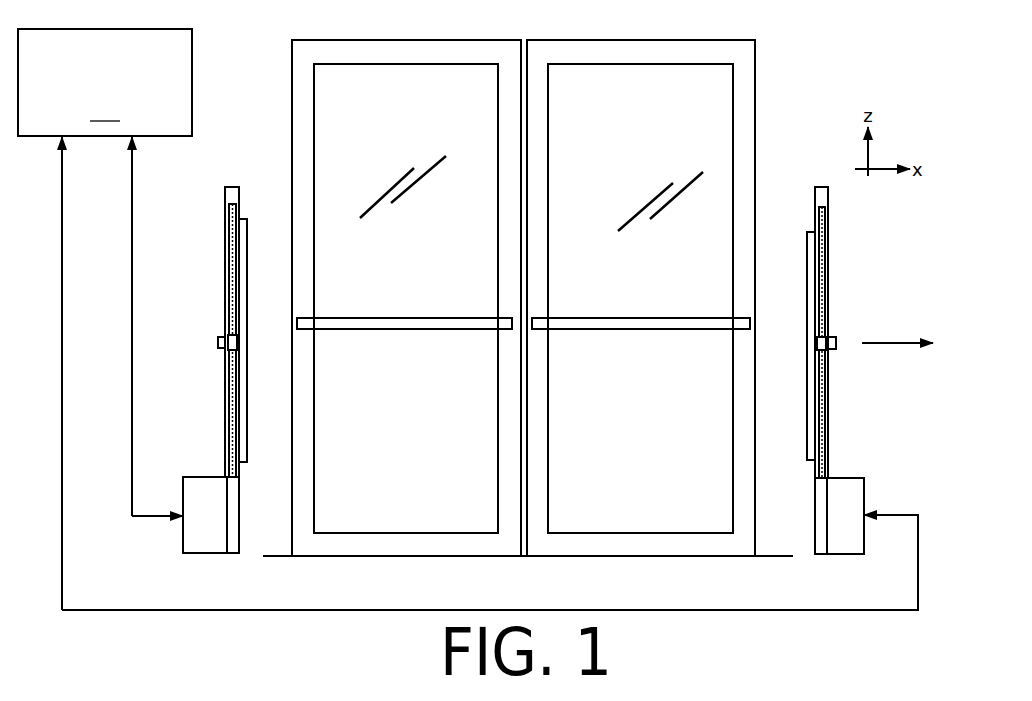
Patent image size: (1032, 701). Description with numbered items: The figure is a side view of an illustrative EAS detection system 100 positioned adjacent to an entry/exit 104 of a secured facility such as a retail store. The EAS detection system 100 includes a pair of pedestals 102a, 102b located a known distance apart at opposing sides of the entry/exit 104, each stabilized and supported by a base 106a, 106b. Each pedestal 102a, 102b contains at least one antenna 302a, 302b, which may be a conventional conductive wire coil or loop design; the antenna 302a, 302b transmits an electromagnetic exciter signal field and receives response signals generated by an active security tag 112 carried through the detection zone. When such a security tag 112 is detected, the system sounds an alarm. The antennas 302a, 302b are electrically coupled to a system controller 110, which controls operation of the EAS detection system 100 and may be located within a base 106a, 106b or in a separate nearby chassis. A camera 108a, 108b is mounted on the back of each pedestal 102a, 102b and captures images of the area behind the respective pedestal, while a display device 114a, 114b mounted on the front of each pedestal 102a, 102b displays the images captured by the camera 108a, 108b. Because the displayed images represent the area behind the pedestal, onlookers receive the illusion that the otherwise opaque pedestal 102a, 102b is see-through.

The EAS detection system 100 is at (828, 78).
The entry/exit 104 is at (756, 138).
The pedestal 102a is at (229, 330).
The pedestal 102b is at (829, 310).
The antenna 302a is at (252, 376).
The antenna 302b is at (820, 356).
The camera 108a is at (218, 345).
The camera 108b is at (836, 345).
The display device 114a is at (228, 360).
The display device 114b is at (828, 384).
The base 106a is at (208, 477).
The base 106b is at (853, 477).
The system controller 110 is at (215, 343).
The security tag 112 is at (897, 329).